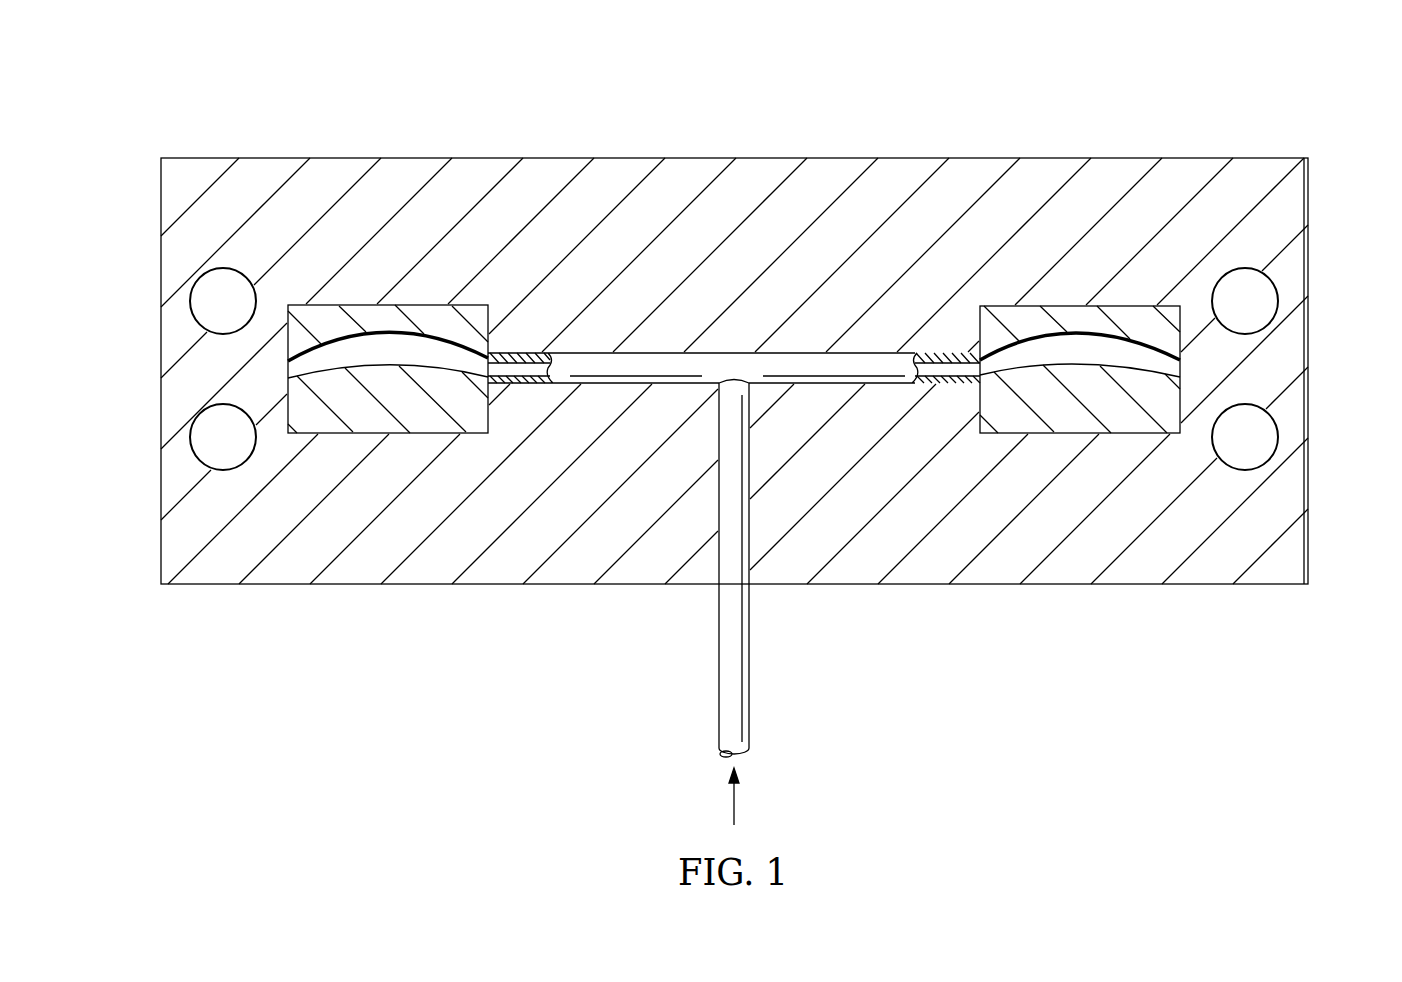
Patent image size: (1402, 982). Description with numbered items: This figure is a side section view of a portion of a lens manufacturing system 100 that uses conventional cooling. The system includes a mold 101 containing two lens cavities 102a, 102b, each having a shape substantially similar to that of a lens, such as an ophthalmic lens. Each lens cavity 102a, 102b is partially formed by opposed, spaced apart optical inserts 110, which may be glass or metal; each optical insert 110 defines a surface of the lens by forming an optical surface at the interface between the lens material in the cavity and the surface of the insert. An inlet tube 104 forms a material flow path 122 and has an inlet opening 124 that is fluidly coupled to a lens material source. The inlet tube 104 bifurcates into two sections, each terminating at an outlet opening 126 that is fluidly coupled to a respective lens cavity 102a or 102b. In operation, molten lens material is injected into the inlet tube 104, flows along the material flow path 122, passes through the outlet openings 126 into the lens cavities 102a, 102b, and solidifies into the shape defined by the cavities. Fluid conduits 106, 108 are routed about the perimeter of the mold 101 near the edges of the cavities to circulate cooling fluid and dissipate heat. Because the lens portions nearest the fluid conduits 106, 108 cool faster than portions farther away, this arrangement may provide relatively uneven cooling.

The lens manufacturing system 100 is at (735, 429).
The mold 101 is at (202, 162).
The lens cavity 102a is at (403, 340).
The lens cavity 102b is at (1103, 340).
The inlet tube 104 is at (749, 745).
The fluid conduit 106 is at (227, 468).
The fluid conduit 108 is at (228, 270).
The optical insert 110 is at (327, 315).
The material flow path 122 is at (749, 650).
The inlet opening 124 is at (722, 762).
The outlet opening 126 is at (494, 368).